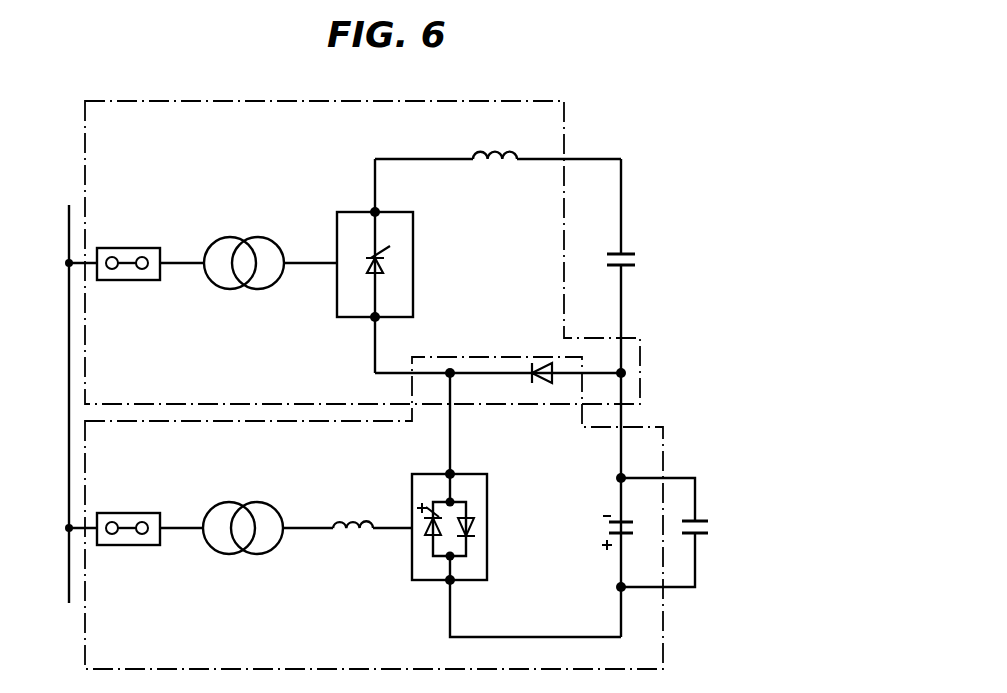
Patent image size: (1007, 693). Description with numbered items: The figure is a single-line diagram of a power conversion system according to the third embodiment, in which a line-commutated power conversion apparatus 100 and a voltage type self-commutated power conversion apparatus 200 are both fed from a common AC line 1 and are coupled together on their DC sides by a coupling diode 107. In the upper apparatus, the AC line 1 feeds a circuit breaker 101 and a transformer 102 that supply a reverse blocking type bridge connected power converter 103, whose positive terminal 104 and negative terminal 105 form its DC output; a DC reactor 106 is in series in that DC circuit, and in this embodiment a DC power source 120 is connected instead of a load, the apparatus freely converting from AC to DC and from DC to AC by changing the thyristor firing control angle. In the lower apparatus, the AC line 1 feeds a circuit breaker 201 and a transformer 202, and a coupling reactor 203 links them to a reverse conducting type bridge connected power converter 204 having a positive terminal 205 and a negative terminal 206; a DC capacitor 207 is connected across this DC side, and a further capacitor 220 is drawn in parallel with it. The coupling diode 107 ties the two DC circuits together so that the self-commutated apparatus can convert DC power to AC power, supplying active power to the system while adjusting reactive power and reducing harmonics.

The AC bus / power line 1 is at (69, 405).
The line-commutated power conversion apparatus 100 is at (440, 100).
The circuit breaker 101 is at (128, 248).
The transformer 102 is at (248, 240).
The reverse blocking type bridge connected power converter 103 is at (413, 256).
The positive terminal 104 is at (375, 212).
The negative terminal 105 is at (370, 320).
The DC reactor 106 is at (497, 160).
The coupling diode 107 is at (541, 364).
The DC power source 120 is at (625, 253).
The voltage type self-commutated power conversion apparatus 200 is at (195, 668).
The circuit breaker 201 is at (128, 513).
The transformer 202 is at (245, 503).
The coupling reactor 203 is at (362, 533).
The reverse conducting type bridge connected power converter 204 is at (488, 515).
The positive terminal 205 is at (447, 583).
The negative terminal 206 is at (452, 474).
The DC capacitor 207 is at (606, 532).
The capacitor 220 is at (706, 521).